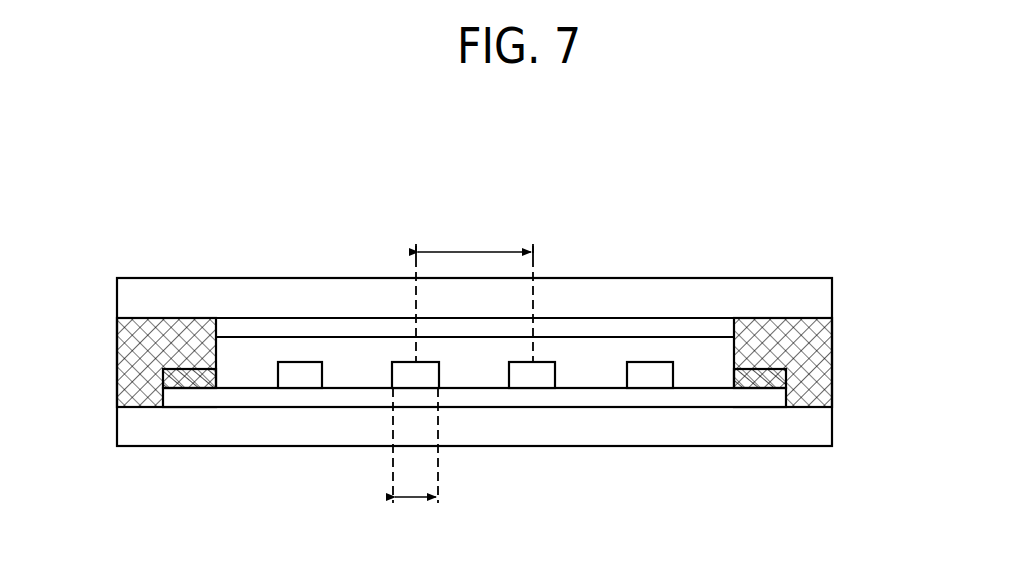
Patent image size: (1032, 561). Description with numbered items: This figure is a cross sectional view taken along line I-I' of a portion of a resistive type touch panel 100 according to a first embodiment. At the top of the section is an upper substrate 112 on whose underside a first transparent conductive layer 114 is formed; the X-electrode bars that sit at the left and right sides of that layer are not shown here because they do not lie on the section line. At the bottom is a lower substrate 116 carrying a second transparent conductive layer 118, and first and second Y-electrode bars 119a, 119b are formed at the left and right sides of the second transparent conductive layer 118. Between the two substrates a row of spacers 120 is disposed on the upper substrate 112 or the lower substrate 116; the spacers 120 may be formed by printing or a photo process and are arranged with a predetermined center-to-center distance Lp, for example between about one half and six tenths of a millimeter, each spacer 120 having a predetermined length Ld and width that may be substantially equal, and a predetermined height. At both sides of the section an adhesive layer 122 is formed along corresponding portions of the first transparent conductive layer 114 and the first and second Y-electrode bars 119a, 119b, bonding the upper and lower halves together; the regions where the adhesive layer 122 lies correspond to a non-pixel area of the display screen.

The display device 100 is at (778, 208).
The upper substrate 112 is at (832, 298).
The first transparent conductive layer 114 is at (676, 325).
The lower substrate 116 is at (832, 428).
The second transparent conductive layer 118 is at (600, 398).
The first Y-electrode bar 119a is at (185, 388).
The second Y-electrode bar 119b is at (757, 388).
The spacer 120 is at (307, 380).
The adhesive layer 122 is at (117, 357).